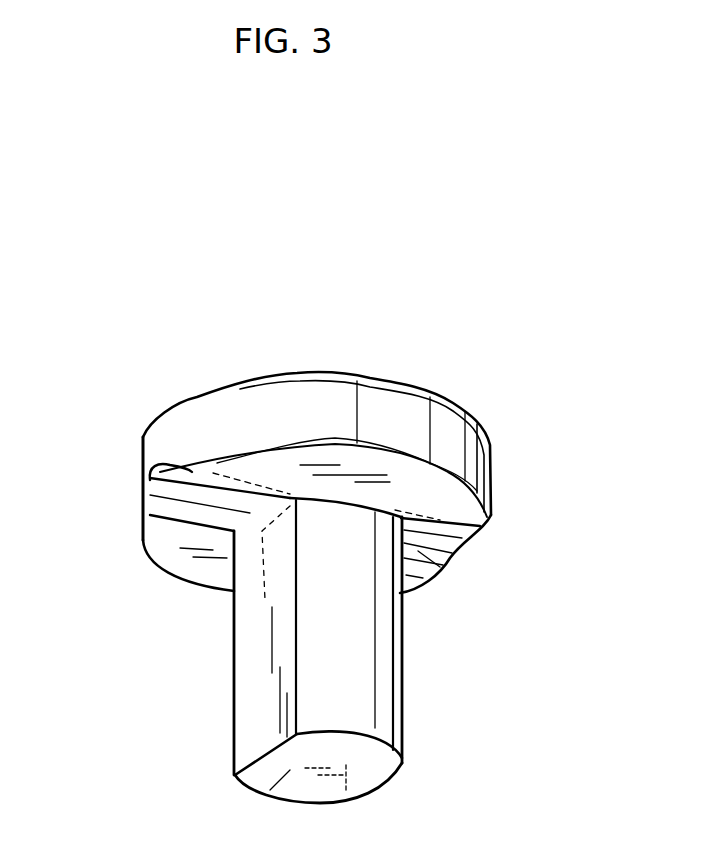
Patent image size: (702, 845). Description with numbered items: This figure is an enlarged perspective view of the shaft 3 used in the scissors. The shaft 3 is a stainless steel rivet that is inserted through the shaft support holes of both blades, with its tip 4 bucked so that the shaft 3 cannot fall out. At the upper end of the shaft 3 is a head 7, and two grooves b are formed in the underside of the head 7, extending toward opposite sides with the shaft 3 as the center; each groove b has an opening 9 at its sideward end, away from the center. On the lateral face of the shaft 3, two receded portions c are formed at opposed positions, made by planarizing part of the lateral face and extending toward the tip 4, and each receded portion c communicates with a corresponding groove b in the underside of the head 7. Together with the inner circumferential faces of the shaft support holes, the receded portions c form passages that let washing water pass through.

The head 7 is at (217, 406).
The opening 9 is at (142, 491).
The groove b is at (210, 519).
The shaft 3 is at (388, 652).
The receded portion c is at (245, 662).
The tip 4 is at (285, 782).